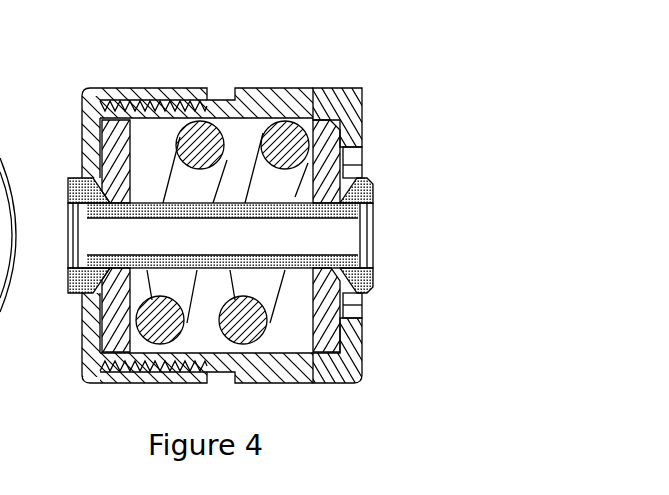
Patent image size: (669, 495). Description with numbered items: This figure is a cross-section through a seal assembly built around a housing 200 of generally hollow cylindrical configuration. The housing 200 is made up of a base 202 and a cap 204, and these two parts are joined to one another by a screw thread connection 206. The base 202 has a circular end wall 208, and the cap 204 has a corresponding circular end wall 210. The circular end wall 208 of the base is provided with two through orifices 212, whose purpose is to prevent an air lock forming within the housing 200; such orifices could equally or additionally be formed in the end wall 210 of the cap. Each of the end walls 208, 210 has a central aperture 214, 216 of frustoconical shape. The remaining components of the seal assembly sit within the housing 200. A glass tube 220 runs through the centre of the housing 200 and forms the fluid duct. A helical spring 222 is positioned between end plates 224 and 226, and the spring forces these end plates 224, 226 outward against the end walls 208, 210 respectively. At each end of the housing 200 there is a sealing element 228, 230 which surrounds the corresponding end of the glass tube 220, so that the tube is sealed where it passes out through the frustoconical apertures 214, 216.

The housing 200 is at (290, 66).
The base 202 is at (343, 100).
The cap 204 is at (90, 98).
The screw thread connection 206 is at (143, 107).
The circular end wall 208 is at (367, 143).
The circular end wall 210 is at (80, 137).
The through orifices 212 is at (365, 158).
The central aperture 214 is at (340, 293).
The central aperture 216 is at (72, 285).
The glass tube 220 is at (303, 251).
The helical spring 222 is at (200, 140).
The end plate 224 is at (330, 338).
The end plate 226 is at (108, 340).
The sealing element 228 is at (370, 285).
The sealing element 230 is at (67, 193).